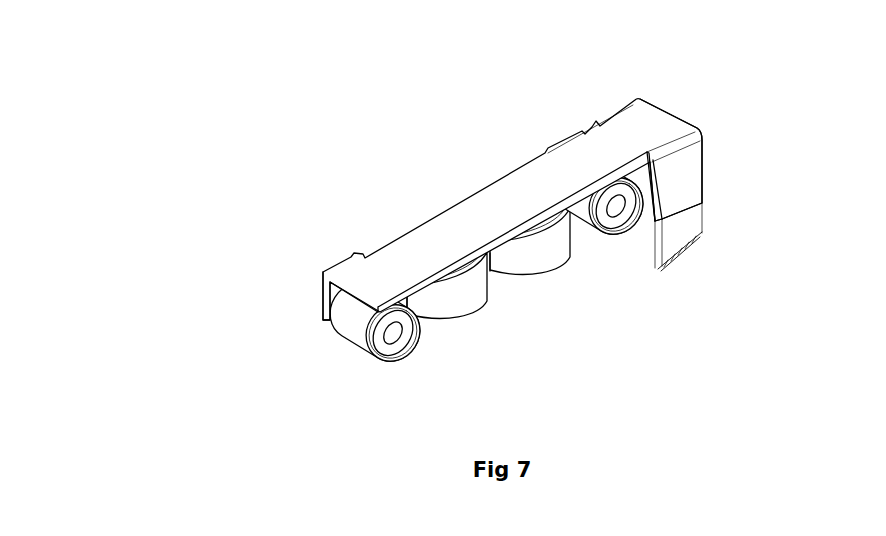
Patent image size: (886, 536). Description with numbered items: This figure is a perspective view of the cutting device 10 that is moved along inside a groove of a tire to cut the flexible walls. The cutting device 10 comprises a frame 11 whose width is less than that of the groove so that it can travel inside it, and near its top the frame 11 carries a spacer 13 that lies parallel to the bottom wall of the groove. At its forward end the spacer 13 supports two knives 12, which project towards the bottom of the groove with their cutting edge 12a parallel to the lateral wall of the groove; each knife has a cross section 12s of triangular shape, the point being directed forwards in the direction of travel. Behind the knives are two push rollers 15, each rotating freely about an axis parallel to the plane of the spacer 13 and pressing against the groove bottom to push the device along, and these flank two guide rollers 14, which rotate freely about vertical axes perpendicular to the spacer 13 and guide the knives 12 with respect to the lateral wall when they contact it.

The cutting device 10 is at (468, 188).
The frame 11 is at (352, 258).
The knife 12 is at (730, 137).
The cutting edge 12a is at (700, 188).
The cross section 12s is at (667, 258).
The spacer 13 is at (493, 198).
The guide roller 14 is at (470, 293).
The push roller 15 is at (357, 332).